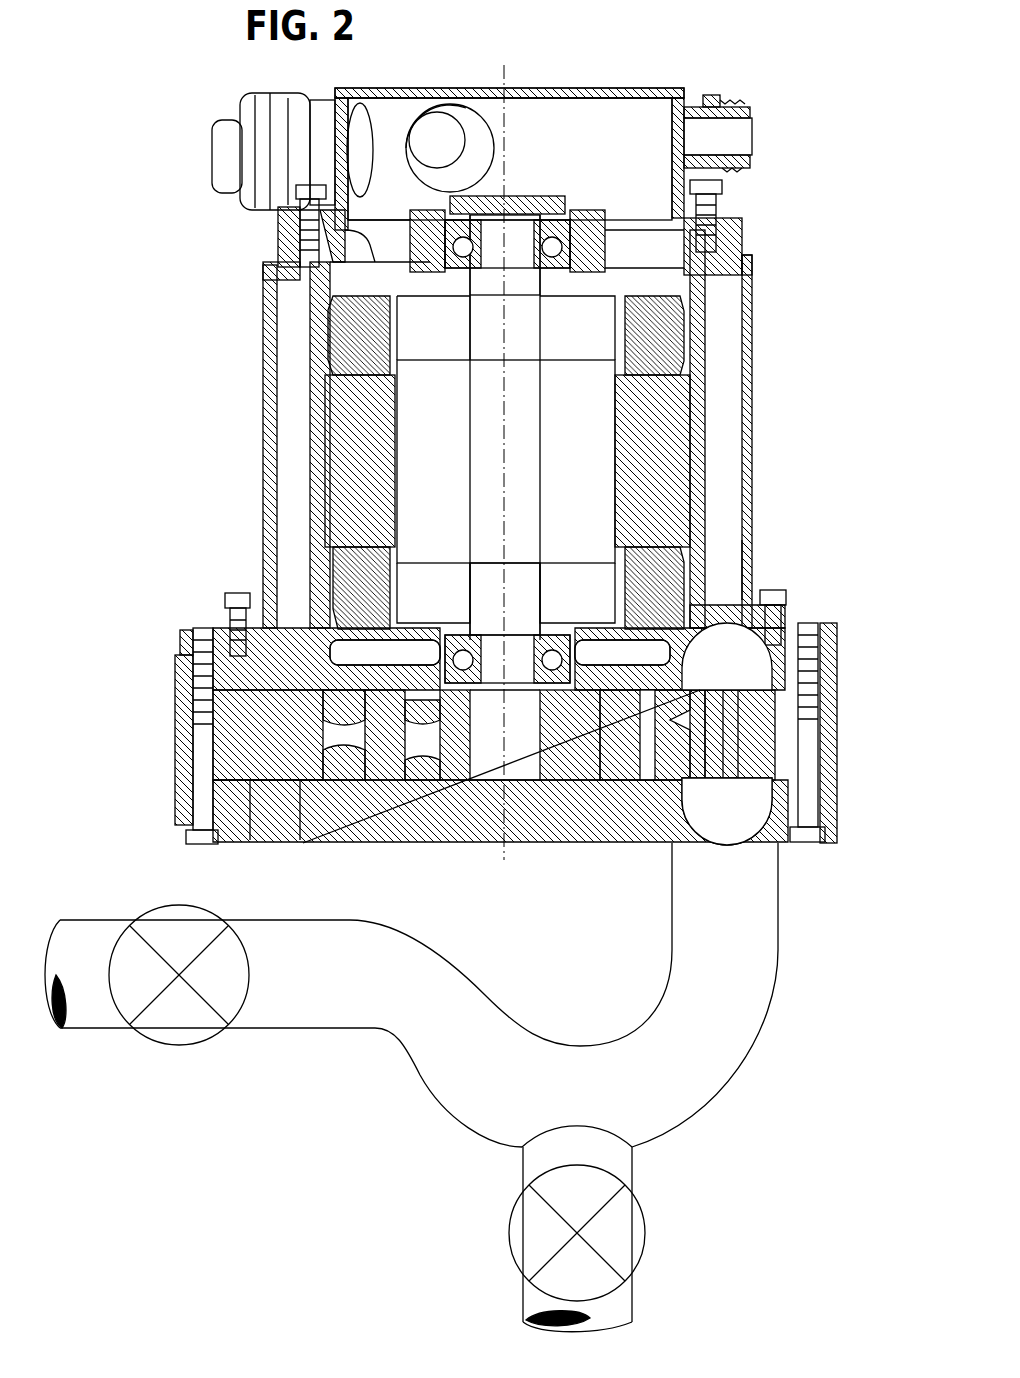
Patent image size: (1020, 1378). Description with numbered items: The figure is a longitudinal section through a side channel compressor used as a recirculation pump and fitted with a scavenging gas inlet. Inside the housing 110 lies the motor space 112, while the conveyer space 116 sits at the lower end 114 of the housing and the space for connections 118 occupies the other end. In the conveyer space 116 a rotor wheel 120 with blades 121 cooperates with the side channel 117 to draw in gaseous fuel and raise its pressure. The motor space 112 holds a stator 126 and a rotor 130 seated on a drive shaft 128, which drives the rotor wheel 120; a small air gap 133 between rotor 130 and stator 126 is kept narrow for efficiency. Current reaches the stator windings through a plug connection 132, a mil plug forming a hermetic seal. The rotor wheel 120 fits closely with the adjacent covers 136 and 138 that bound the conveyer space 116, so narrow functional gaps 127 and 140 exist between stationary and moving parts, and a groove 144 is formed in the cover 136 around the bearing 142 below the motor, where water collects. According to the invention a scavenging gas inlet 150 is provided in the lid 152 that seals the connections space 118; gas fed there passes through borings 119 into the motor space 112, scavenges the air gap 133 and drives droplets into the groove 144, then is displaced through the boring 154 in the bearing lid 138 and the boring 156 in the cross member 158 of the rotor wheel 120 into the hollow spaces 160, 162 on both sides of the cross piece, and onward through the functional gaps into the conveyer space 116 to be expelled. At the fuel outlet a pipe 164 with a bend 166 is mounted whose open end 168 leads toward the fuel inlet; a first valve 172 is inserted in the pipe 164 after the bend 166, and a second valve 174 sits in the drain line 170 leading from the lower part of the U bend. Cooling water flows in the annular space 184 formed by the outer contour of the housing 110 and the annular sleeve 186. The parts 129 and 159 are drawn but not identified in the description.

The housing 110 is at (740, 252).
The motor space 112 is at (603, 338).
The lower end 114 is at (788, 615).
The conveyer space 116 is at (700, 770).
The side channel 117 is at (748, 678).
The space for connections 118 is at (591, 90).
The borings 119 is at (372, 228).
The rotor wheel 120 is at (610, 776).
The blades 121 is at (726, 721).
The stator 126 is at (328, 586).
The functional gap 127 is at (218, 667).
The drive shaft 128 is at (530, 584).
The lower pump plate 129 is at (282, 814).
The rotor 130 is at (452, 364).
The plug connection 132 is at (248, 192).
The air gap 133 is at (399, 451).
The cover 136 is at (312, 790).
The bearing lid 138 is at (235, 605).
The functional gap 140 is at (190, 714).
The bearing 142 is at (558, 655).
The groove 144 is at (414, 640).
The scavenging gas inlet 150 is at (754, 104).
The lid 152 is at (648, 110).
The boring 154 is at (612, 684).
The boring 156 is at (568, 746).
The cross member 158 is at (406, 748).
The upper bearing 159 is at (552, 239).
The hollow space 160 is at (458, 750).
The hollow space 162 is at (646, 780).
The pipe 164 is at (780, 921).
The bend 166 is at (694, 1120).
The open end 168 is at (64, 1028).
The drain line 170 is at (524, 1172).
The first valve 172 is at (202, 1032).
The second valve 174 is at (638, 1235).
The annular space 184 is at (271, 392).
The annular sleeve 186 is at (748, 386).